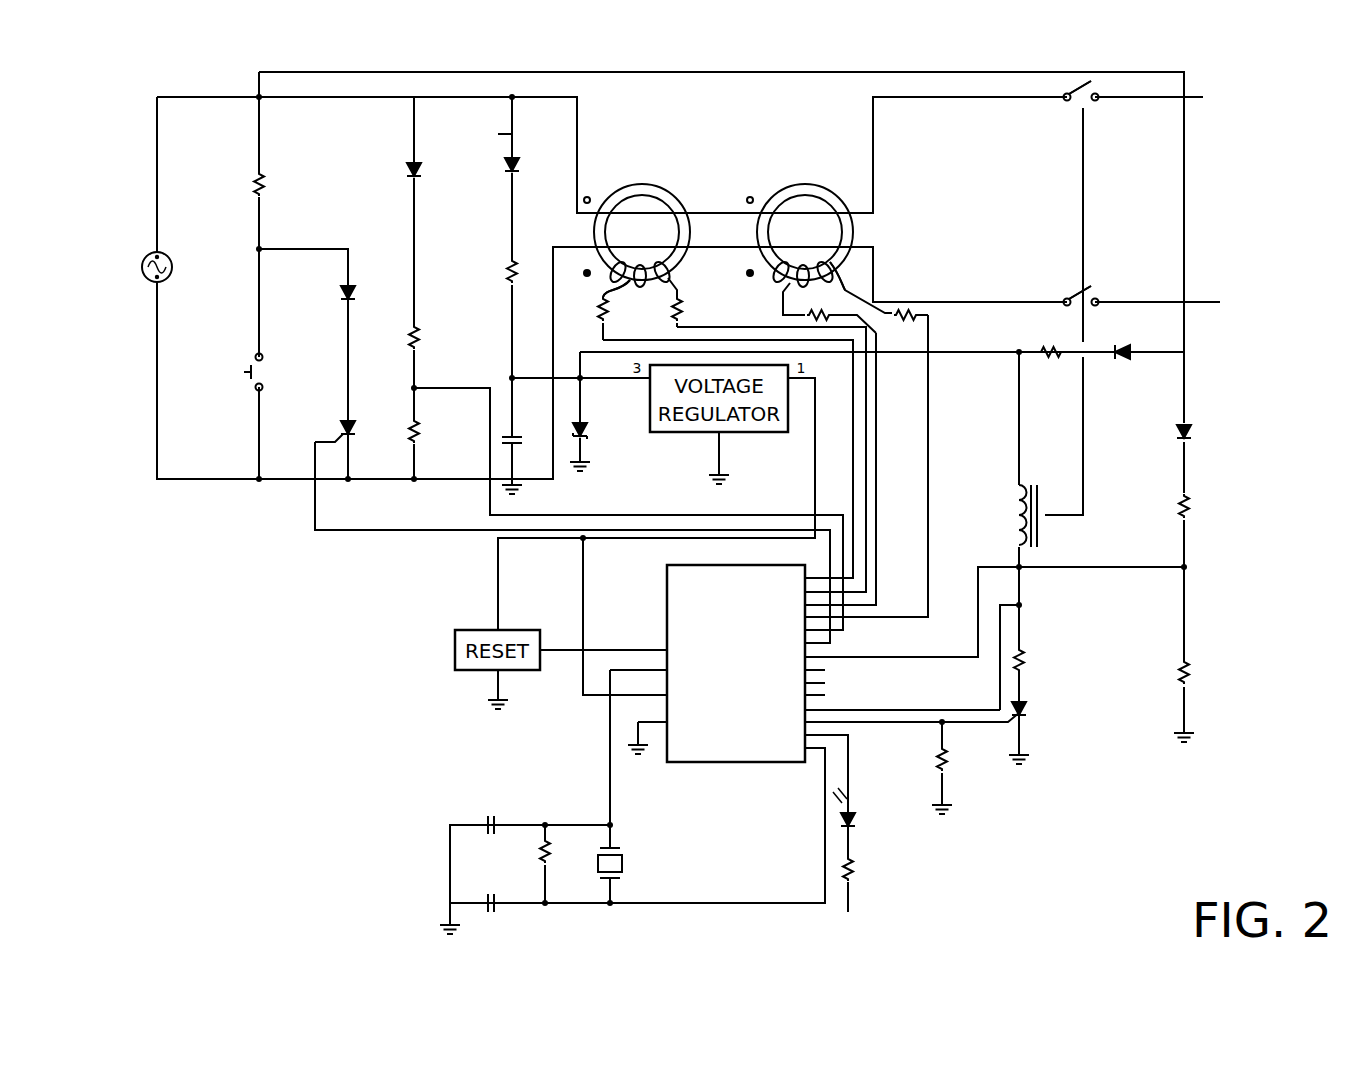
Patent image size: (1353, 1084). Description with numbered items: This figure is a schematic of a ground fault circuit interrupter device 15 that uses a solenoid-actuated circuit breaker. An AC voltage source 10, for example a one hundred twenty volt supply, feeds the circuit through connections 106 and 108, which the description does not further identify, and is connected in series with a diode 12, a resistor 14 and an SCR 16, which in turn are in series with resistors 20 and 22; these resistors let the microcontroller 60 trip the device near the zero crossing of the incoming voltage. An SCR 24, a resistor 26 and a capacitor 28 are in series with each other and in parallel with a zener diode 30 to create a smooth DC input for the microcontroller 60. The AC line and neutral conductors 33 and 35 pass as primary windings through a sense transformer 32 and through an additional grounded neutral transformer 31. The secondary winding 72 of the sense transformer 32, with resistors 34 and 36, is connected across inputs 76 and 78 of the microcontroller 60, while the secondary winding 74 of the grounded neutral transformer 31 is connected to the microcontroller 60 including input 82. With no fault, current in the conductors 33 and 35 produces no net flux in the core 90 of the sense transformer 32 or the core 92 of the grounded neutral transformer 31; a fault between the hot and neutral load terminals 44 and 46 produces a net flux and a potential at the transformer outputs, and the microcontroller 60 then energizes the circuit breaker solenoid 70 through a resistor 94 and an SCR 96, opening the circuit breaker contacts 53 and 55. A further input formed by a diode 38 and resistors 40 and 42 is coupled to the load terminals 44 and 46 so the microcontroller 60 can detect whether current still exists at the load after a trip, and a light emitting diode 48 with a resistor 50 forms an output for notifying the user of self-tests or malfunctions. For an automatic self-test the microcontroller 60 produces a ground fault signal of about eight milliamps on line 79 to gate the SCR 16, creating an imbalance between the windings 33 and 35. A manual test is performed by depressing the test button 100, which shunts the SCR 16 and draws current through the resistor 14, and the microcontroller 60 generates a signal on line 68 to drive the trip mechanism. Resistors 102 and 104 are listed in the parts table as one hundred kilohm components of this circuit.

The voltage source 10 is at (132, 265).
The diode 12 is at (356, 290).
The resistor 14 is at (268, 185).
The GFCI device 15 is at (364, 600).
The SCR 16 is at (354, 432).
The resistor 20 is at (420, 340).
The resistor 22 is at (420, 437).
The SCR 24 is at (520, 162).
The resistor 26 is at (506, 272).
The capacitor 28 is at (520, 433).
The zener diode 30 is at (590, 436).
The grounded neutral transformer 31 is at (796, 172).
The sense transformer 32 is at (633, 172).
The AC line conductor 33 is at (710, 212).
The resistor 34 is at (604, 338).
The neutral conductor 35 is at (741, 250).
The resistor 36 is at (681, 327).
The diode 38 is at (1204, 437).
The resistor 40 is at (1195, 506).
The resistor 42 is at (1194, 668).
The load terminal 44 is at (1197, 98).
The load terminal 46 is at (1197, 294).
The light emitting diode 48 is at (858, 821).
The resistor 50 is at (858, 871).
The circuit breaker contact 53 is at (1079, 108).
The circuit breaker contact 55 is at (1078, 283).
The microcontroller 60 is at (652, 608).
The line 68 is at (900, 708).
The circuit breaker solenoid 70 is at (1014, 521).
The secondary winding 72 is at (600, 283).
The secondary winding 74 is at (840, 262).
The input 76 is at (852, 482).
The input 78 is at (867, 445).
The line 79 is at (844, 640).
The input 82 is at (900, 610).
The core 90 is at (898, 487).
The core 92 is at (770, 240).
The resistor 94 is at (1029, 661).
The SCR 96 is at (1030, 712).
The test button 100 is at (244, 372).
The resistor 102 is at (1055, 337).
The resistor 104 is at (1123, 338).
The line input 106 is at (174, 88).
The neutral input 108 is at (178, 470).